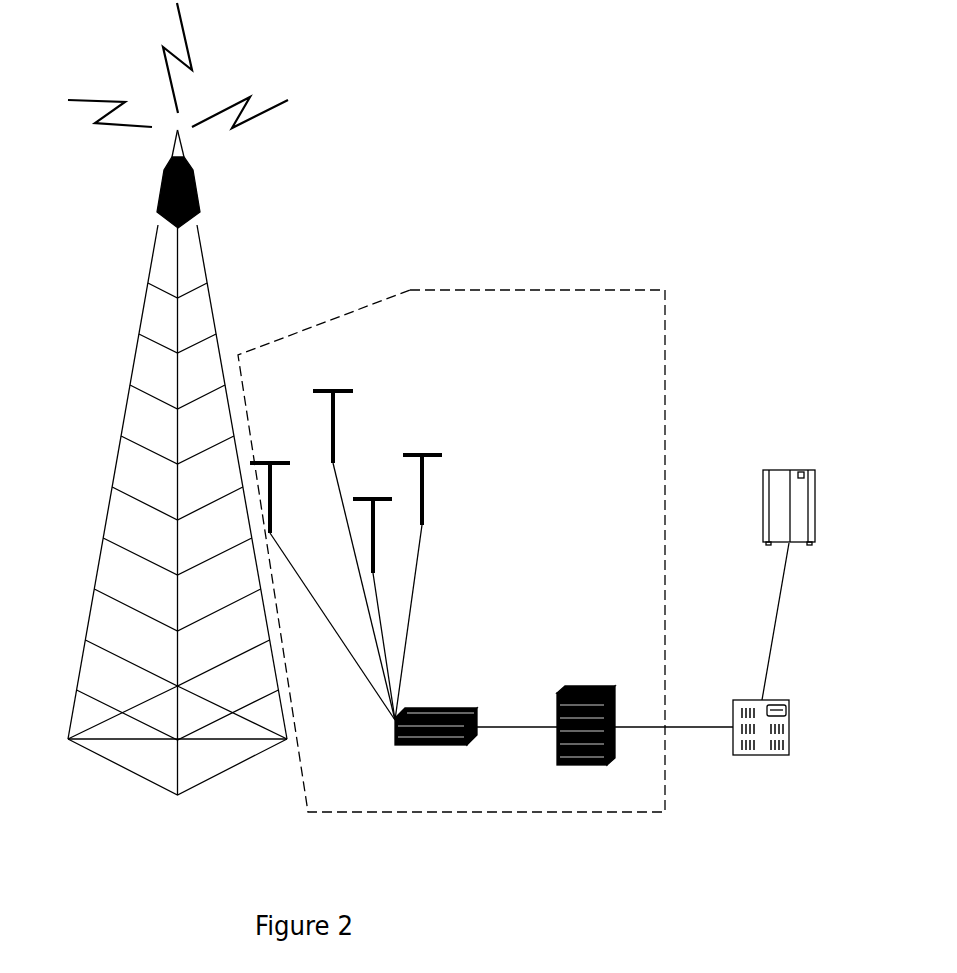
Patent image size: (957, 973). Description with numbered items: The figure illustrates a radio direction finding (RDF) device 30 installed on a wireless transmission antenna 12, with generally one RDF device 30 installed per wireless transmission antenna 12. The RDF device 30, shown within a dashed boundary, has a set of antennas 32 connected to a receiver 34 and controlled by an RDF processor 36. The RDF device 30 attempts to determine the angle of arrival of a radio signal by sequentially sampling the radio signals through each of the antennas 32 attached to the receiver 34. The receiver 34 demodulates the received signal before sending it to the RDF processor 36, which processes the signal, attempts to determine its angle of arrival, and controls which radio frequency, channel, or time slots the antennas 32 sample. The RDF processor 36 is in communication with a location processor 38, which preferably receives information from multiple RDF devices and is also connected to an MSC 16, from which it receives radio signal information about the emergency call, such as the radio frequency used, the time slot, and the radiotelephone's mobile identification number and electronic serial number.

The wireless transmission antenna 12 is at (237, 255).
The MSC 16 is at (807, 455).
The RDF device 30 is at (593, 290).
The antennas 32 is at (273, 447).
The receiver 34 is at (440, 687).
The RDF processor 36 is at (593, 668).
The location processor 38 is at (805, 722).